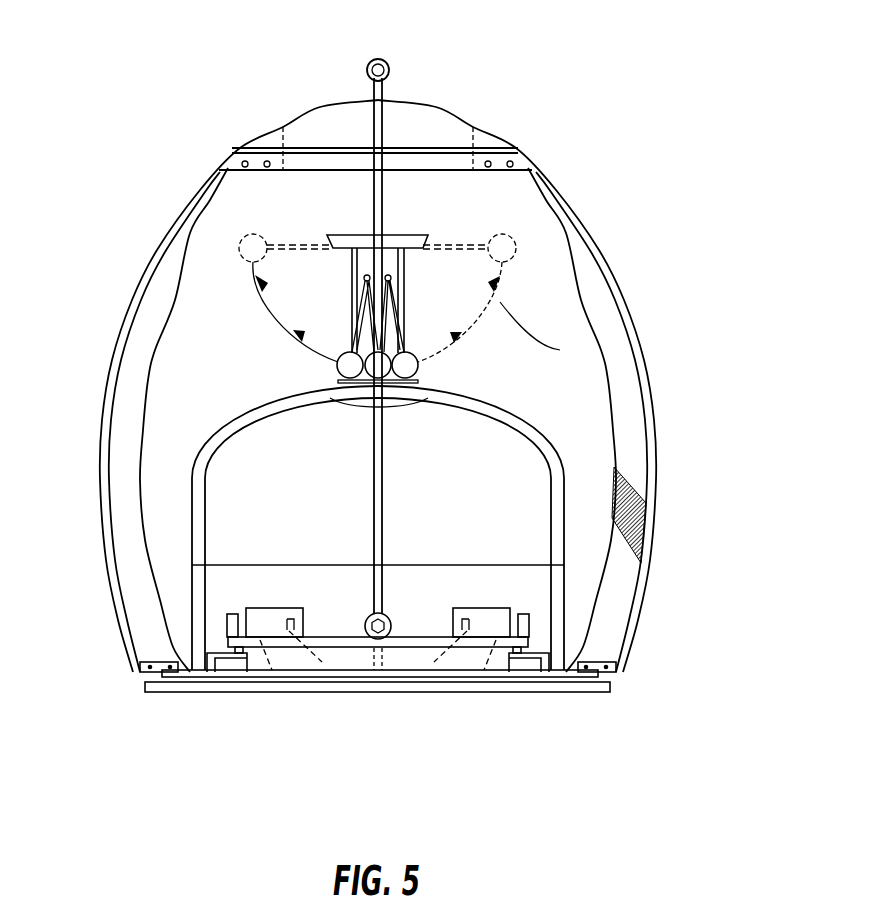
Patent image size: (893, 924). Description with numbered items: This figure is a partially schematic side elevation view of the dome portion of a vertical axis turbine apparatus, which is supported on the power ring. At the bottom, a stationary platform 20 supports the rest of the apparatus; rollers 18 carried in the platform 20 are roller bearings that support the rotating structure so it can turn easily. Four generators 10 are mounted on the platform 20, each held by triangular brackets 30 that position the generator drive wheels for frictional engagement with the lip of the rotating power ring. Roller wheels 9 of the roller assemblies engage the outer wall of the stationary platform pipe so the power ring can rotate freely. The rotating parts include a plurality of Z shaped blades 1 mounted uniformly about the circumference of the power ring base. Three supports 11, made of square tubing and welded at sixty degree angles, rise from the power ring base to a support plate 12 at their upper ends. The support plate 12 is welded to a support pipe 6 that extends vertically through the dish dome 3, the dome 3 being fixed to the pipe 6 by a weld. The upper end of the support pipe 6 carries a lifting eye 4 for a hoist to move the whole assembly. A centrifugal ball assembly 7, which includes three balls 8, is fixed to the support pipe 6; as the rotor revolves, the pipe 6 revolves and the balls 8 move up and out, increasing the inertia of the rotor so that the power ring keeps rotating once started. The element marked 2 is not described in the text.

The Z shaped blades 1 is at (134, 318).
The upper support frame 2 is at (486, 146).
The dish dome 3 is at (385, 100).
The lifting eye 4 is at (389, 56).
The support pipe 6 is at (368, 210).
The centrifugal ball assembly 7 is at (408, 234).
The balls 8 is at (423, 372).
The roller wheel 9 is at (236, 660).
The generators 10 is at (295, 604).
The supports 11 is at (390, 476).
The support plate 12 is at (403, 403).
The rollers 18 is at (152, 675).
The stationary platform 20 is at (610, 687).
The triangular brackets 30 is at (318, 657).